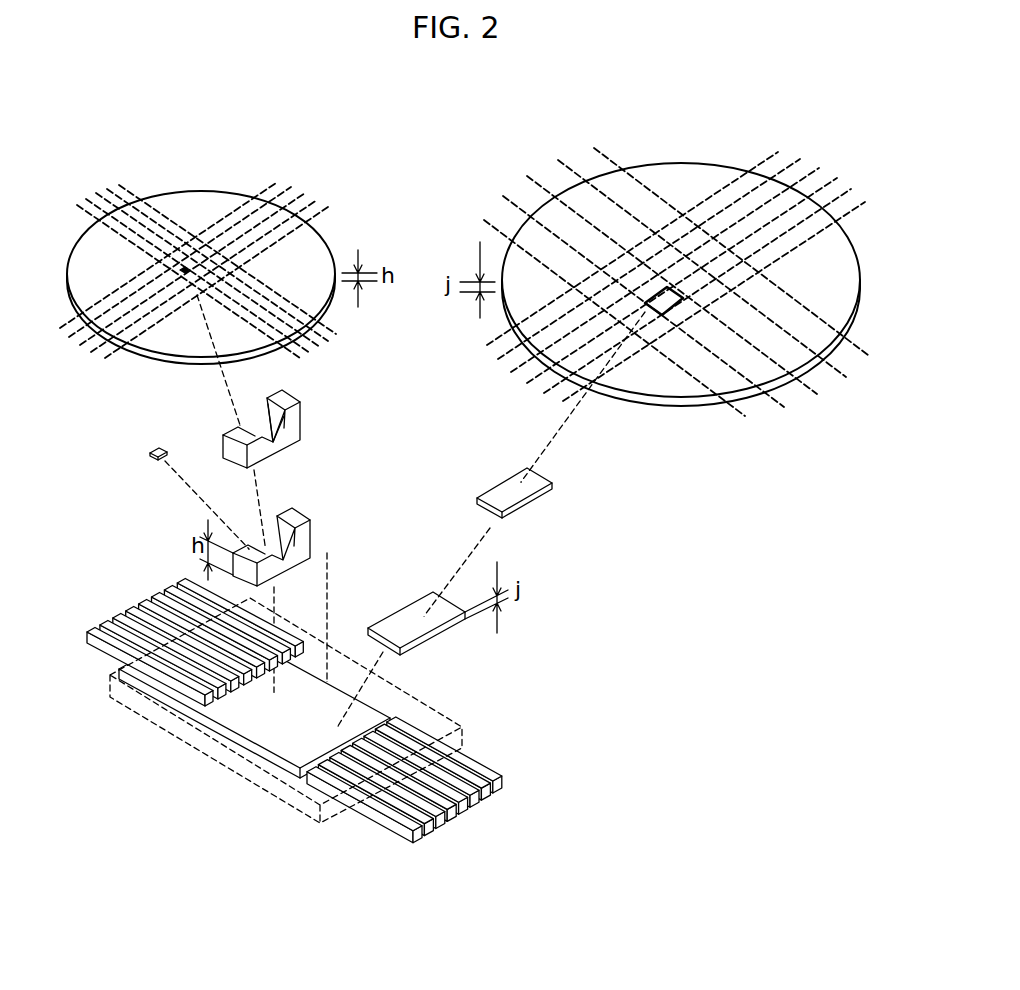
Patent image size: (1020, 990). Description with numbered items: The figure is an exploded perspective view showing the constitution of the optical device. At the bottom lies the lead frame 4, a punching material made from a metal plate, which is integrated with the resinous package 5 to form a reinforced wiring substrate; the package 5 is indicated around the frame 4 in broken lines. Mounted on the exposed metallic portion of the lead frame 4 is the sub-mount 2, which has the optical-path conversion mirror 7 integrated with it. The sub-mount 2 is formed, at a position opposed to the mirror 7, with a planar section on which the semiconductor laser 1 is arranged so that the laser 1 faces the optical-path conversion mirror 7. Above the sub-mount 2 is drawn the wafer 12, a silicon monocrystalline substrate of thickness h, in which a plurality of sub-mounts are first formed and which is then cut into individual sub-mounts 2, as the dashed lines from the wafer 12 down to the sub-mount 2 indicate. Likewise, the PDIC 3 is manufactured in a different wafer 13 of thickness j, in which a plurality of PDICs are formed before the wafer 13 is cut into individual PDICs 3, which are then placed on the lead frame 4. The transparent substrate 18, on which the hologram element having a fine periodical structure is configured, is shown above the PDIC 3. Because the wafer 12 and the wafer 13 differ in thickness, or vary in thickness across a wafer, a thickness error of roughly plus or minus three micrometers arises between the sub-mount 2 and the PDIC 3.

The wafer 12 is at (200, 213).
The wafer 13 is at (647, 212).
The semiconductor laser 1 is at (160, 447).
The sub-mount 2 is at (302, 416).
The optical-path conversion mirror 7 is at (299, 441).
The transparent substrate 18 is at (453, 603).
The PDIC 3 is at (437, 637).
The lead frame 4 is at (265, 765).
The resinous package 5 is at (165, 722).